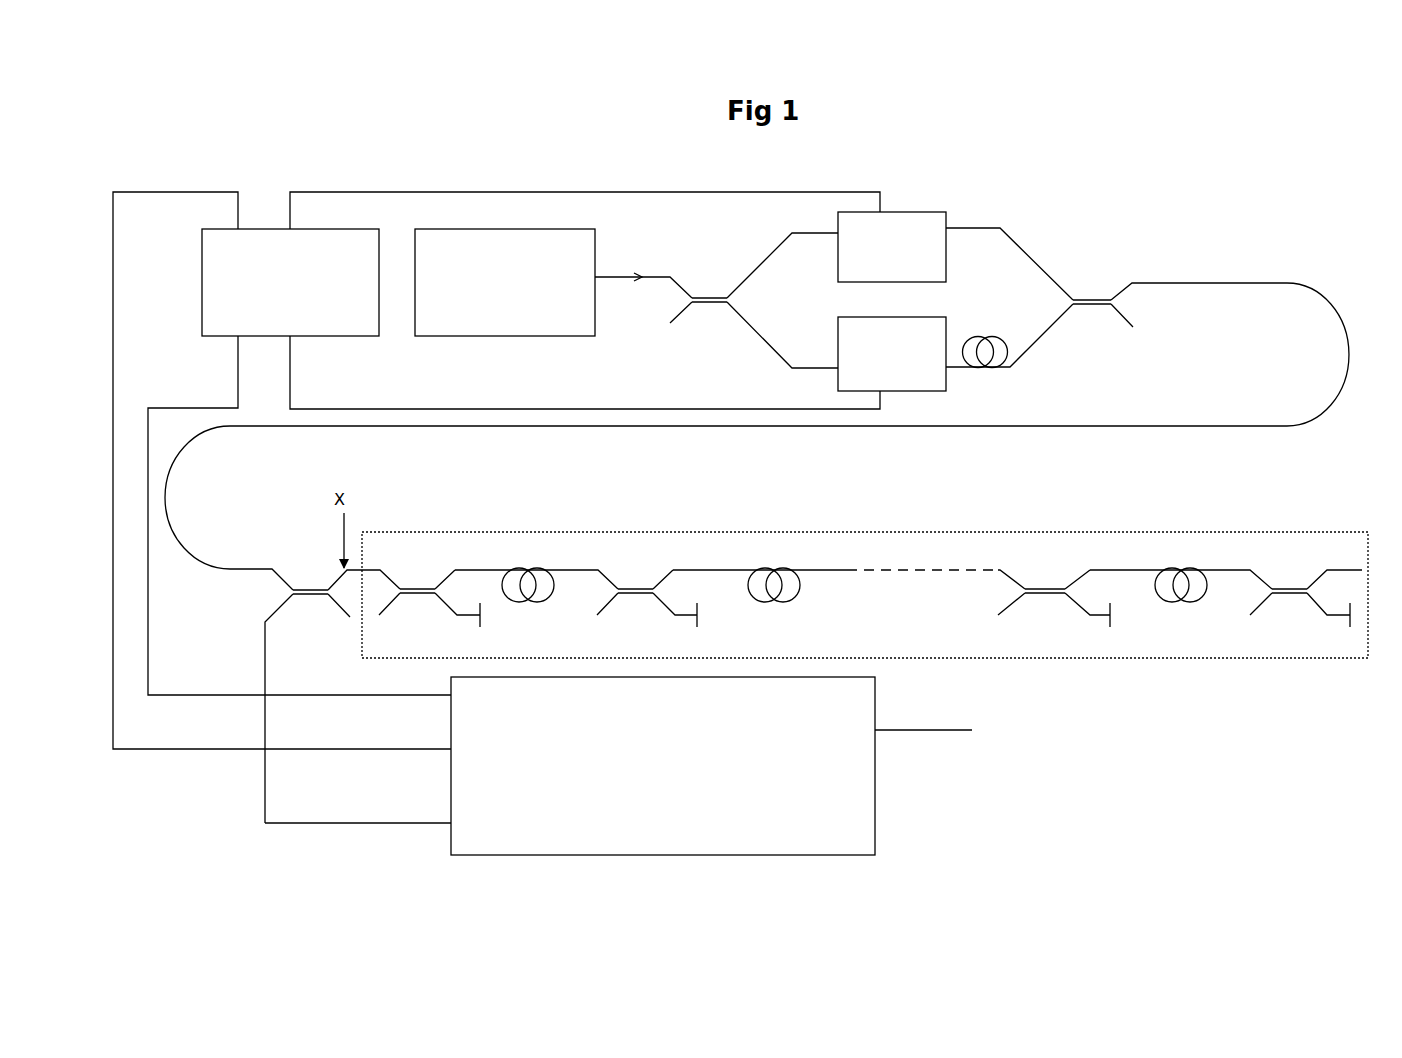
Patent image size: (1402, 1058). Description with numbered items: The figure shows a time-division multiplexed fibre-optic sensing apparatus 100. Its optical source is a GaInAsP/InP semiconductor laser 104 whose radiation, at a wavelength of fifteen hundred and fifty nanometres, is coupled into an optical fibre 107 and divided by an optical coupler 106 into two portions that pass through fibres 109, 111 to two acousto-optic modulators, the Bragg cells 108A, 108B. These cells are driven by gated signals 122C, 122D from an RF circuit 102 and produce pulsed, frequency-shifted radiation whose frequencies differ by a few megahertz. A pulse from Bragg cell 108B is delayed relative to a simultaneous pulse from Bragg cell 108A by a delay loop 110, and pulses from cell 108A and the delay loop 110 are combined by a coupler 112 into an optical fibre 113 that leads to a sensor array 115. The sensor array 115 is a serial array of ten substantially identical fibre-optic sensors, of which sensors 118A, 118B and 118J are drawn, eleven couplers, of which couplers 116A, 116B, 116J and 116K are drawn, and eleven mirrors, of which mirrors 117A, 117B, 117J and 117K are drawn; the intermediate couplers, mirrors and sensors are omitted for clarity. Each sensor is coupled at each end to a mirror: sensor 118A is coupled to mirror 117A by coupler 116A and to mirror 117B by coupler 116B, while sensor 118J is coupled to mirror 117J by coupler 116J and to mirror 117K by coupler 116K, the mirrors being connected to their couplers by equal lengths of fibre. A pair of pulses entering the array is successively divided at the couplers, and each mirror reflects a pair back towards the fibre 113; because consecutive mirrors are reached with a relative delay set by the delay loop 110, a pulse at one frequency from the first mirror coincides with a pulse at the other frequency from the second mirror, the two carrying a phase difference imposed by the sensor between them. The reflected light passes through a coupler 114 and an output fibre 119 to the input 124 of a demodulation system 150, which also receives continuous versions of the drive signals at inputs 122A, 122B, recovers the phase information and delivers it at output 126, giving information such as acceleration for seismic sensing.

The apparatus 100 is at (1148, 210).
The RF circuit 102 is at (303, 296).
The laser 104 is at (520, 296).
The optical coupler 106 is at (712, 290).
The optical fibre 107 is at (666, 276).
The Bragg cell 108A is at (912, 276).
The Bragg cell 108B is at (912, 383).
The fibre 109 is at (765, 254).
The delay loop 110 is at (1000, 337).
The fibre 111 is at (761, 340).
The coupler 112 is at (1088, 300).
The optical fibre 113 is at (880, 427).
The coupler 114 is at (310, 598).
The sensor array 115 is at (702, 532).
The coupler 116A is at (418, 587).
The coupler 116B is at (637, 587).
The coupler 116J is at (1040, 587).
The coupler 116K is at (1288, 587).
The mirror 117A is at (491, 632).
The mirror 117B is at (700, 620).
The mirror 117J is at (1130, 638).
The mirror 117K is at (1352, 618).
The fibre-optic sensor 118A is at (547, 570).
The fibre-optic sensor 118B is at (791, 570).
The fibre-optic sensor 118J is at (1200, 570).
The output fibre 119 is at (265, 628).
The input 122A is at (442, 749).
The input 122B is at (444, 695).
The gated signal 122C is at (330, 192).
The gated signal 122D is at (315, 409).
The input 124 is at (437, 823).
The output 126 is at (914, 730).
The demodulation system 150 is at (683, 761).